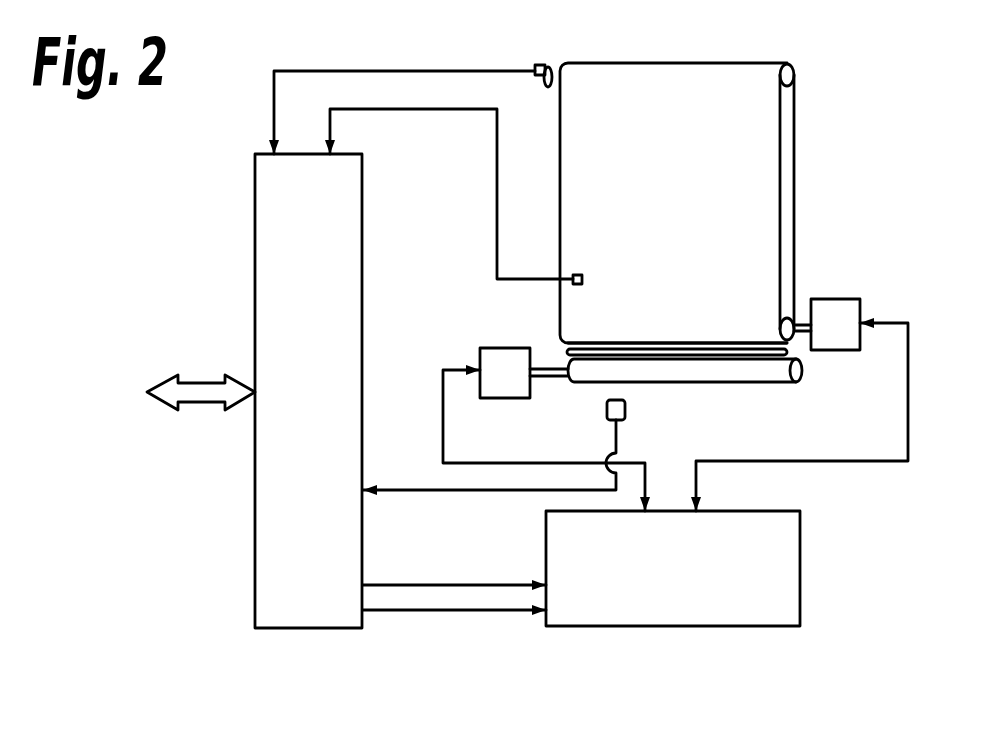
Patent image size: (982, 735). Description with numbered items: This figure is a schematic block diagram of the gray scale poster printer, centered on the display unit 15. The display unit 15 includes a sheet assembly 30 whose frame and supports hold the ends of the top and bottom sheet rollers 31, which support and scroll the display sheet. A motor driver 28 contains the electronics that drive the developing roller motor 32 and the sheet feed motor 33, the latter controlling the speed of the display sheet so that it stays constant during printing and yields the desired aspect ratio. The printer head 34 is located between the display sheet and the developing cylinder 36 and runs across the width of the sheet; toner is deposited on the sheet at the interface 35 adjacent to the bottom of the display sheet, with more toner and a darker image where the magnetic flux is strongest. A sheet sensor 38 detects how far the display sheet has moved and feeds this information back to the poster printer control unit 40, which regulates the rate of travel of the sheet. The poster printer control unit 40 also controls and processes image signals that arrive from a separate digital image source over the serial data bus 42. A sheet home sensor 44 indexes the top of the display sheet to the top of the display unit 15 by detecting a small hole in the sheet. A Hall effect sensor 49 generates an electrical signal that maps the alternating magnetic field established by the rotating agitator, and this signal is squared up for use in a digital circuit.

The display unit 15 is at (665, 63).
The motor driver 28 is at (800, 560).
The sheet assembly 30 is at (787, 178).
The top and bottom sheet rollers 31 is at (795, 68).
The developing roller motor 32 is at (530, 393).
The sheet feed motor 33 is at (848, 298).
The printer head 34 is at (568, 350).
The interface 35 is at (590, 346).
The developing cylinder 36 is at (772, 383).
The sheet sensor 38 is at (548, 67).
The poster printer control unit 40 is at (288, 628).
The serial data bus 42 is at (190, 380).
The sheet home sensor 44 is at (583, 276).
The Hall effect sensor 49 is at (625, 412).